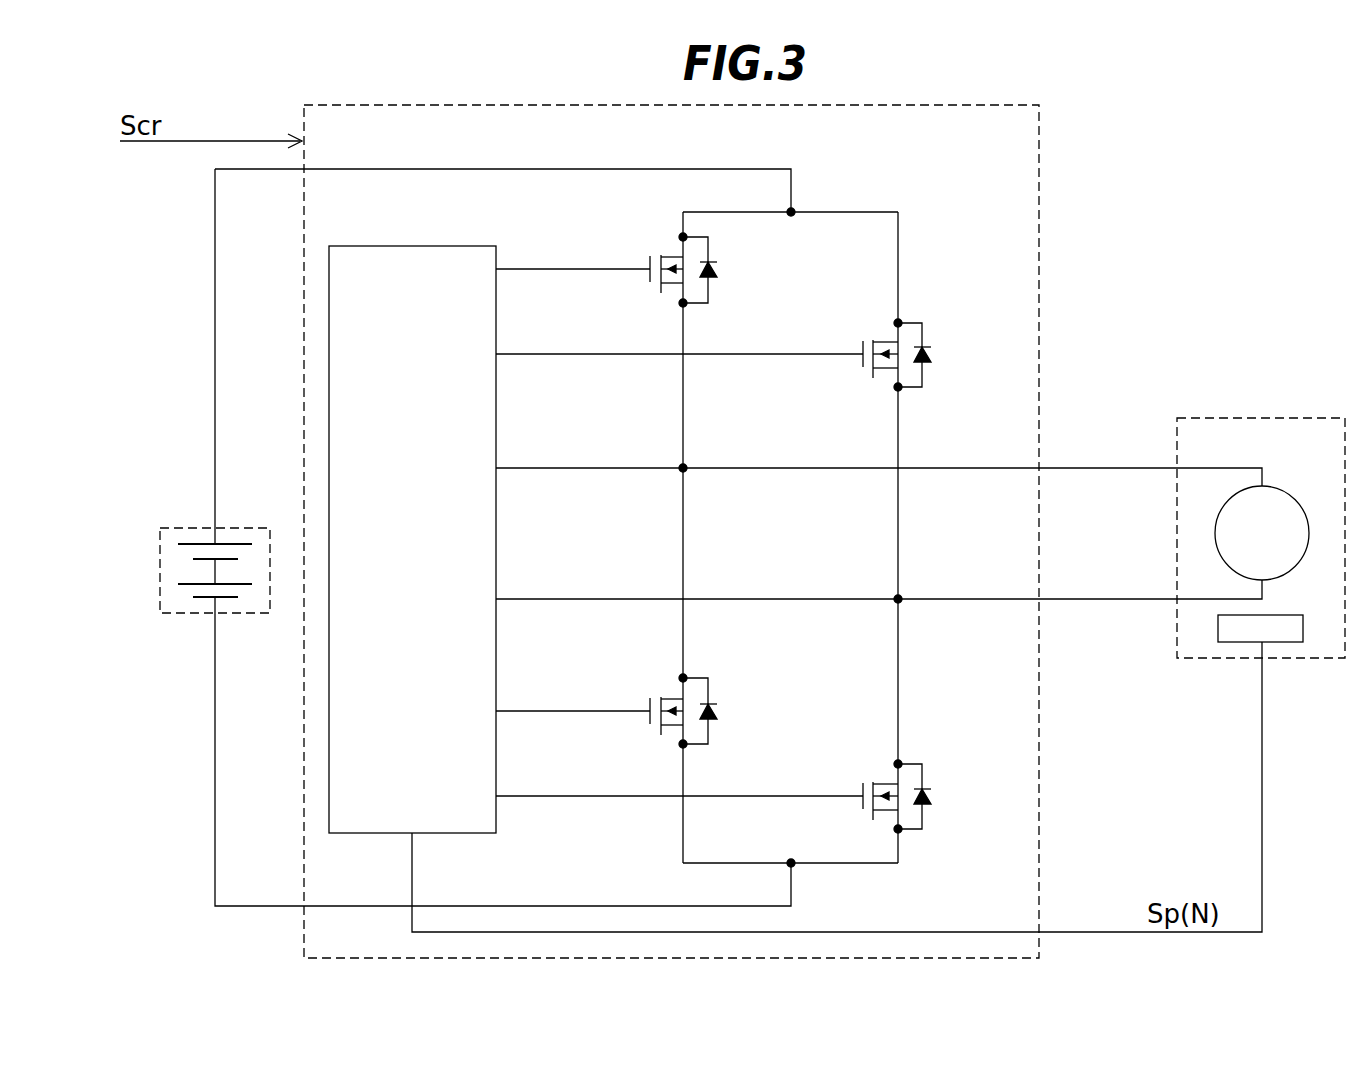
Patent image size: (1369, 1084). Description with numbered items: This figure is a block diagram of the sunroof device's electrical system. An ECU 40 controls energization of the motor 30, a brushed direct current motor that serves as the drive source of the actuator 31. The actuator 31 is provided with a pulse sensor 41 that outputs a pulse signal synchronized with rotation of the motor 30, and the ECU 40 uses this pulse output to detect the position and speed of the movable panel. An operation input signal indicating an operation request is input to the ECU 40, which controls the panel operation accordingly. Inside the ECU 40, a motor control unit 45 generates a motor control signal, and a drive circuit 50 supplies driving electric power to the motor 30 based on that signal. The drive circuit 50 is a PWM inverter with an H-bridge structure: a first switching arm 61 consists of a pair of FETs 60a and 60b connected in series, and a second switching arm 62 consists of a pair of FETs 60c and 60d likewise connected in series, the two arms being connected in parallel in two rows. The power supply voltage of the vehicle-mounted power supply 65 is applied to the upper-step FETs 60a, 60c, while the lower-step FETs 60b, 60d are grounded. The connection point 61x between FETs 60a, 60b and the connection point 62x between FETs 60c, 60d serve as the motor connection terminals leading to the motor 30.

The motor 30 is at (1285, 491).
The actuator 31 is at (1191, 417).
The ECU 40 is at (1039, 258).
The pulse sensor 41 is at (1285, 645).
The motor control unit 45 is at (411, 244).
The drive circuit 50 is at (584, 842).
The FET 60a is at (660, 255).
The FET 60b is at (660, 697).
The FET 60c is at (873, 340).
The FET 60d is at (873, 782).
The first switching arm 61 is at (683, 533).
The connection point 61x is at (683, 467).
The second switching arm 62 is at (898, 535).
The connection point 62x is at (898, 598).
The vehicle-mounted power supply 65 is at (178, 526).